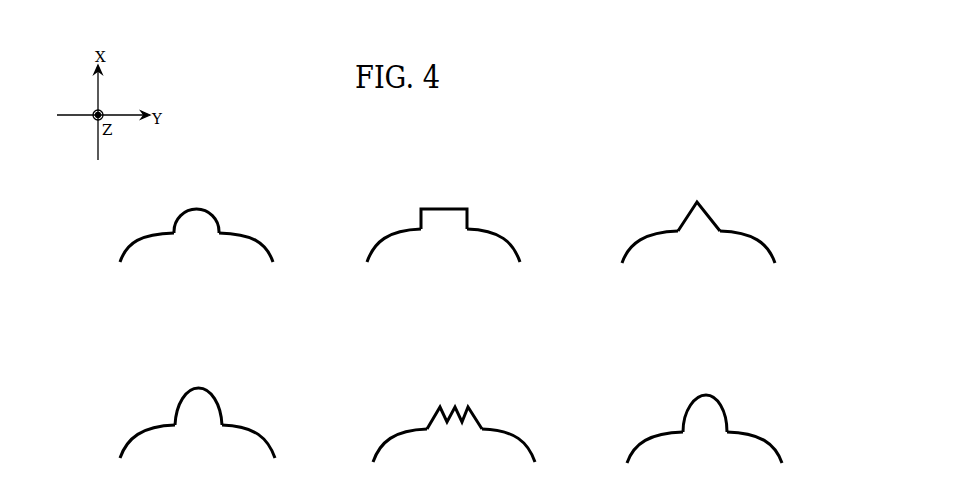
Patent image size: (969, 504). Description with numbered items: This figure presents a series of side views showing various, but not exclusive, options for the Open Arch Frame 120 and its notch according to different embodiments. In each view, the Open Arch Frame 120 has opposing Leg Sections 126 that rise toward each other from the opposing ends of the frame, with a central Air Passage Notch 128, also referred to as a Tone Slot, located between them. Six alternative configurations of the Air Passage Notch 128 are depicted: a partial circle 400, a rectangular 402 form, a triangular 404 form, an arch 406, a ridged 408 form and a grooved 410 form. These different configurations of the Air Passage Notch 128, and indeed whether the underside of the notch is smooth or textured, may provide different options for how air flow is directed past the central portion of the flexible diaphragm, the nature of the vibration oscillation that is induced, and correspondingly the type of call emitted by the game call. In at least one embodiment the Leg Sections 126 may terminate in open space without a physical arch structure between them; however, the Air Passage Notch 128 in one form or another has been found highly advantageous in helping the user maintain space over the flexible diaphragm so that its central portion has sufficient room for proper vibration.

The Open Arch Frame 120 is at (411, 308).
The partial circle 400 is at (120, 227).
The rectangular 402 is at (386, 207).
The triangular 404 is at (636, 212).
The arch 406 is at (119, 419).
The ridged 408 is at (379, 415).
The grooved 410 is at (637, 414).
The Leg Sections 126 is at (250, 238).
The Air Passage Notch 128 is at (196, 210).